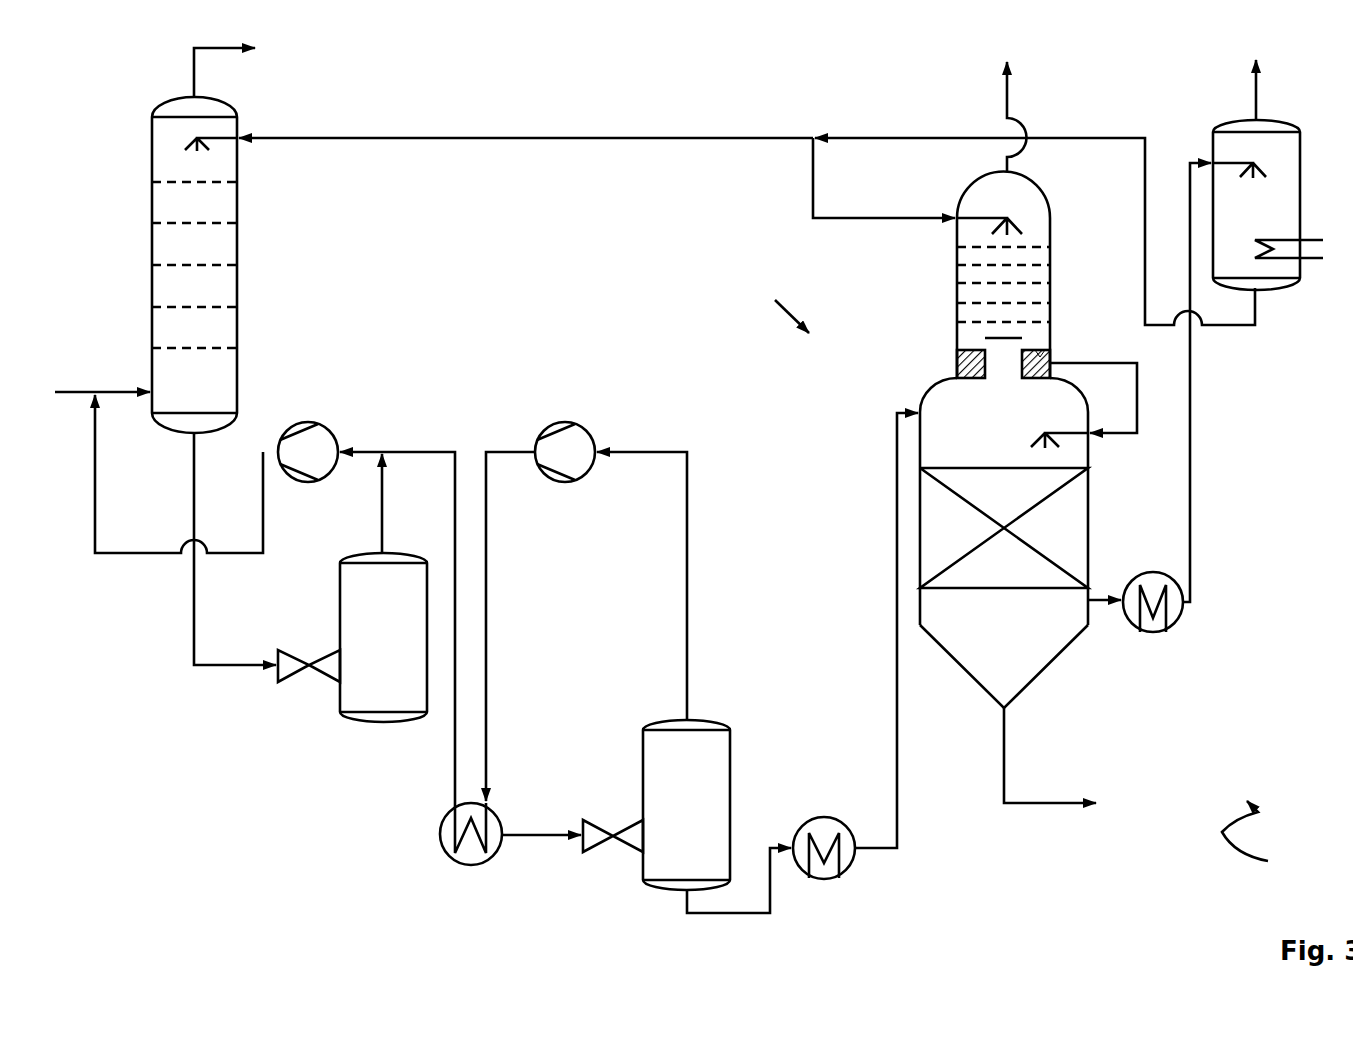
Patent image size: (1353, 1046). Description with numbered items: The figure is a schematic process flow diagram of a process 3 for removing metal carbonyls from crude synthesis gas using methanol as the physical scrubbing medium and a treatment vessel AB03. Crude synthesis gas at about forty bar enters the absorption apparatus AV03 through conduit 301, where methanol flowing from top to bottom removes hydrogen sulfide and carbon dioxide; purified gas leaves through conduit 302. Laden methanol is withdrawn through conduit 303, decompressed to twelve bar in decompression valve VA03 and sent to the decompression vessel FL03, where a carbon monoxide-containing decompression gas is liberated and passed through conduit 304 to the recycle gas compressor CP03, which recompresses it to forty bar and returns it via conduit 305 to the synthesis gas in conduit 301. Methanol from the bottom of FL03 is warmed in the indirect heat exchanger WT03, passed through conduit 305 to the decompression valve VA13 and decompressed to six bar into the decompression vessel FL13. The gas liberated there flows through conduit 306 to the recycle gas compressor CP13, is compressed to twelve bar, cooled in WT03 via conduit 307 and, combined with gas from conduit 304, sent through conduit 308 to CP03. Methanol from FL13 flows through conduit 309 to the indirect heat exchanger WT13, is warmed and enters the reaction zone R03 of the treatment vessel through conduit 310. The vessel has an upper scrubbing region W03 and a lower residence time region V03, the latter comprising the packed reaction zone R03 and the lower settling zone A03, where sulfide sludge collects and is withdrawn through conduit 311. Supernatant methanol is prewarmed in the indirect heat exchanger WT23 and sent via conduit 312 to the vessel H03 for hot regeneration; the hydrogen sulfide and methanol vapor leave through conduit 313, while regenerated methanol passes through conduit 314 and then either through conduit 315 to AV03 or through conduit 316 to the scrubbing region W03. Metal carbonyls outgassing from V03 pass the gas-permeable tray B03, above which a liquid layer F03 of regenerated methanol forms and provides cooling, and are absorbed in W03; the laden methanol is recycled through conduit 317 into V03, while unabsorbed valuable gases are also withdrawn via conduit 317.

The absorption apparatus AV03 is at (237, 266).
The recycle gas compressor CP03 is at (307, 424).
The recycle gas compressor CP13 is at (564, 424).
The decompression valve VA03 is at (307, 673).
The decompression valve VA13 is at (613, 837).
The decompression vessel FL03 is at (380, 724).
The decompression vessel FL13 is at (643, 760).
The indirect heat exchanger WT03 is at (470, 867).
The indirect heat exchanger WT13 is at (824, 880).
The indirect heat exchanger WT23 is at (1157, 633).
The scrubbing region W03 is at (1050, 247).
The liquid layer F03 is at (985, 352).
The gas-permeable tray B03 is at (973, 362).
The residence time region V03 is at (928, 383).
The reaction zone R03 is at (1090, 513).
The settling zone A03 is at (1058, 657).
The vessel H03 is at (1213, 128).
The treatment vessel AB03 is at (774, 306).
The process 3 is at (1254, 841).
The conduit 301 is at (102, 379).
The conduit 302 is at (224, 72).
The conduit 303 is at (235, 563).
The conduit 304 is at (401, 503).
The conduit 305 is at (338, 629).
The conduit 306 is at (660, 586).
The conduit 307 is at (510, 626).
The conduit 308 is at (397, 615).
The conduit 309 is at (739, 880).
The conduit 310 is at (886, 630).
The conduit 311 is at (1050, 769).
The conduit 312 is at (1207, 382).
The conduit 313 is at (1275, 90).
The conduit 314 is at (1035, 219).
The conduit 315 is at (526, 125).
The conduit 316 is at (884, 190).
The conduit 317 is at (1050, 247).